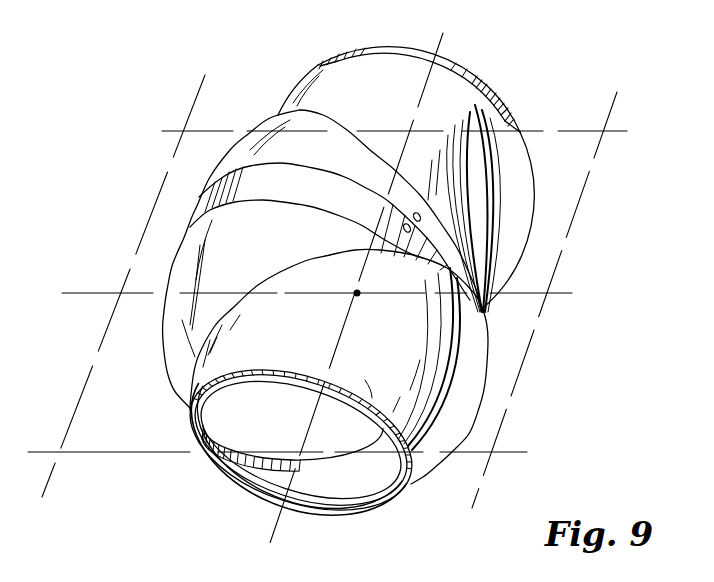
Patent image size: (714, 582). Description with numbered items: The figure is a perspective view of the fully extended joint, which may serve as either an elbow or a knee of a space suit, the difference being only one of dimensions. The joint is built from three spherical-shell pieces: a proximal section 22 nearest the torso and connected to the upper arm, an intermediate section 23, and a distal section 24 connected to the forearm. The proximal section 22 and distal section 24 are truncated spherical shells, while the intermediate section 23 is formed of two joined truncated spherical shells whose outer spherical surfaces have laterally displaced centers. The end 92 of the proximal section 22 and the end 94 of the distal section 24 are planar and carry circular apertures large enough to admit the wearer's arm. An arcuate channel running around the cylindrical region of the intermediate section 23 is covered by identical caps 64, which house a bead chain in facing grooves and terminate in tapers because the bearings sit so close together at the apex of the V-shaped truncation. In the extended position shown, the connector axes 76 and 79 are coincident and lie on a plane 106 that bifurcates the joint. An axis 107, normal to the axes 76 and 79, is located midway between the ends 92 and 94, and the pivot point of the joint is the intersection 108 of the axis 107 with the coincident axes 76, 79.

The proximal section 22 is at (545, 192).
The intermediate section 23 is at (165, 382).
The distal section 24 is at (494, 374).
The cap 64 is at (233, 187).
The connector axis 76 is at (444, 38).
The connector axis 79 is at (280, 524).
The end 92 is at (486, 78).
The end 94 is at (381, 518).
The plane 106 is at (120, 454).
The axis 107 is at (108, 292).
The intersection 108 is at (361, 296).